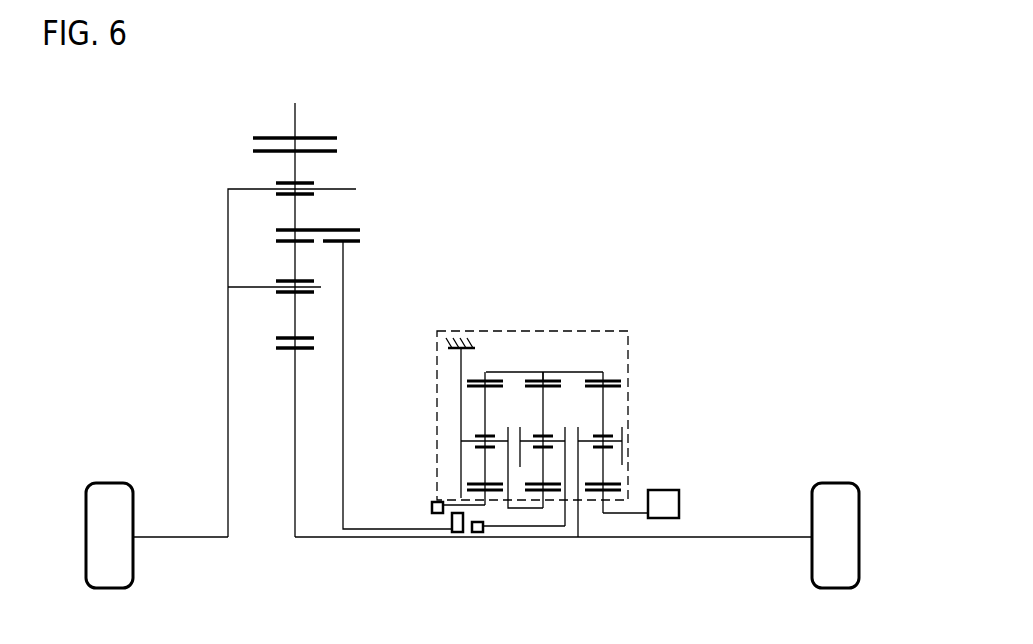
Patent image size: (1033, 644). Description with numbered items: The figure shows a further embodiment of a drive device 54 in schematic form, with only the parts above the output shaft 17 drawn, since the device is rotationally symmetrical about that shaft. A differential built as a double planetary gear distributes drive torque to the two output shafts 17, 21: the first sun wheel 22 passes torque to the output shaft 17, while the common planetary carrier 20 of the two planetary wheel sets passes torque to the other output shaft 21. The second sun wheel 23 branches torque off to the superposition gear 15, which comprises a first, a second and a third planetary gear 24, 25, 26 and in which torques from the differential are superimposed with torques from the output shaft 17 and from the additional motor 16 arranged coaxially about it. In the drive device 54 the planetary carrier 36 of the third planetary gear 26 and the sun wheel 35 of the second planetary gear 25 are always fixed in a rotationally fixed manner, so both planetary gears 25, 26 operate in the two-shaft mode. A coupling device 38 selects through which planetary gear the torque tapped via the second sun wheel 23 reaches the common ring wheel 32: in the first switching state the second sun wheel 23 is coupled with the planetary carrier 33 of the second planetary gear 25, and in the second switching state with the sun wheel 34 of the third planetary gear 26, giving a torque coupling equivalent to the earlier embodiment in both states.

The superposition gear 15 is at (640, 382).
The additional motor 16 is at (660, 490).
The output shaft 17 is at (336, 537).
The common planetary carrier 20 is at (228, 382).
The output shaft 21 is at (210, 537).
The first sun wheel 22 is at (295, 441).
The second sun wheel 23 is at (343, 303).
The first planetary gear 24 is at (609, 361).
The second planetary gear 25 is at (551, 361).
The third planetary gear 26 is at (495, 361).
The common ring wheel 32 is at (567, 372).
The planetary carrier 33 is at (530, 441).
The sun wheel 34 is at (487, 503).
The sun wheel 35 is at (543, 503).
The planetary carrier 36 is at (472, 440).
The coupling device 38 is at (458, 532).
The drive device 54 is at (672, 272).